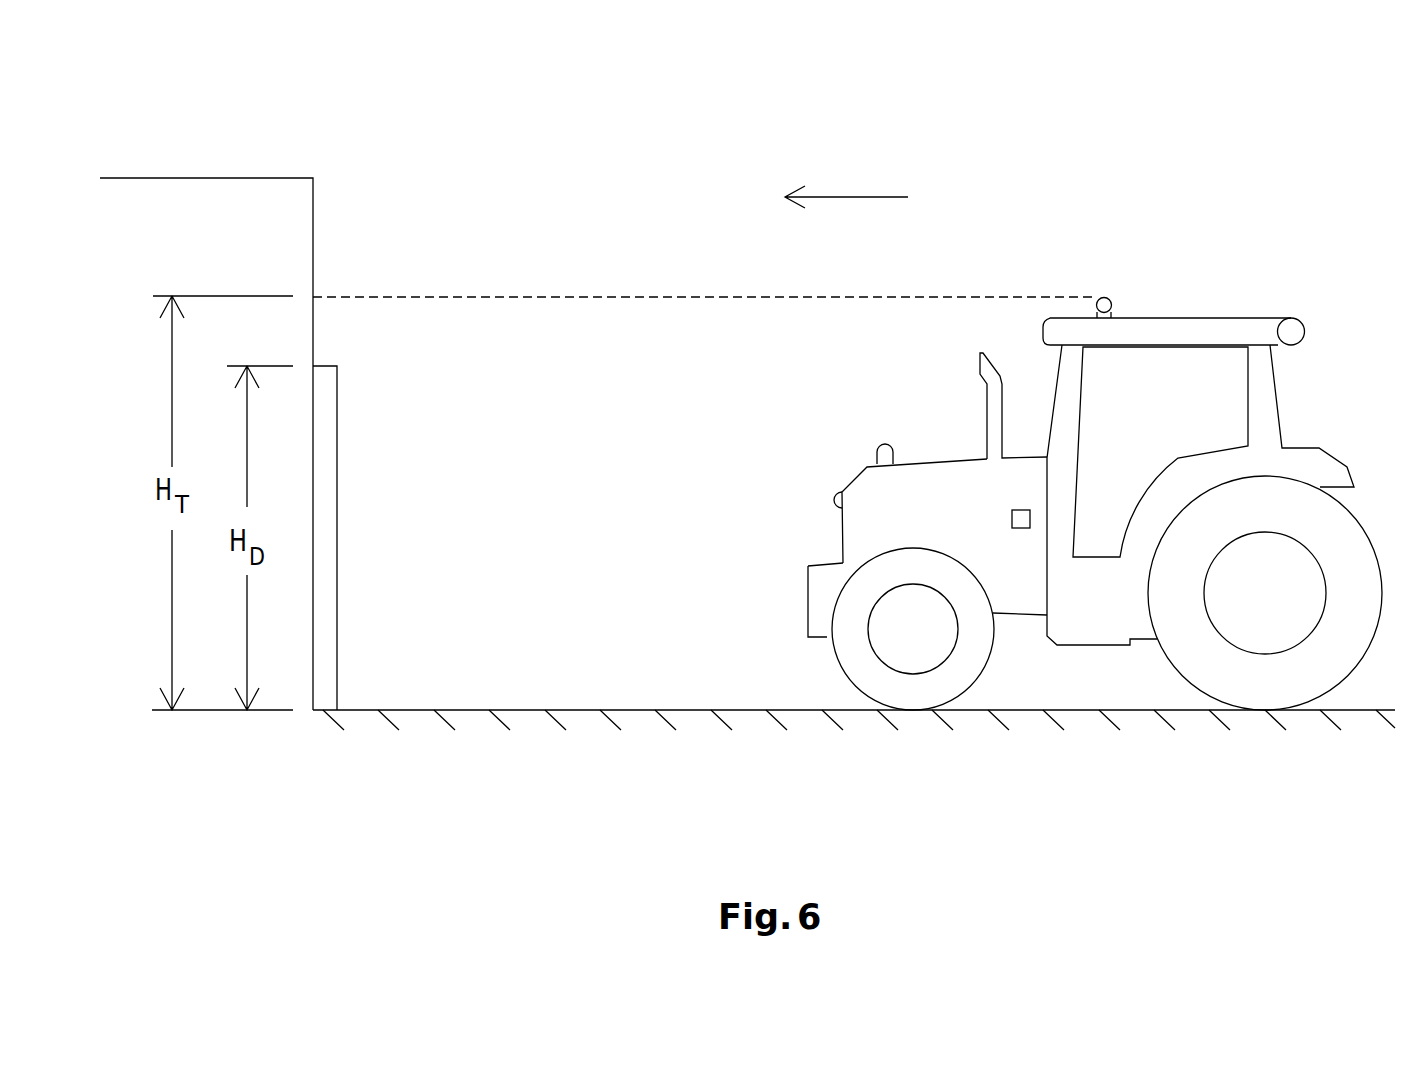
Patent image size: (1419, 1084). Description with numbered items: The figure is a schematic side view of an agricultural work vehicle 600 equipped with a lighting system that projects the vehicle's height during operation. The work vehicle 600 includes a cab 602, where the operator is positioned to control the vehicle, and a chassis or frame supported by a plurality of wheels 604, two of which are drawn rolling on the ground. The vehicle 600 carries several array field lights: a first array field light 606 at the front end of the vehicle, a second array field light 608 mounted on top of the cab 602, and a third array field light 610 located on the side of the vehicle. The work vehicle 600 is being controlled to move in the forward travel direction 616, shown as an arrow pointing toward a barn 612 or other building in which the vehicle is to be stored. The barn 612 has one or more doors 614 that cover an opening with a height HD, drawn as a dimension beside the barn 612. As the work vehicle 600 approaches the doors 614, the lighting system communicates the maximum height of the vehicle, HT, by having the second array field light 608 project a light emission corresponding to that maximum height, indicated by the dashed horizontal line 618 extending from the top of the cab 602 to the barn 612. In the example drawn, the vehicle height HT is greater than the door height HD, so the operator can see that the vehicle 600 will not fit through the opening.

The work vehicle 600 is at (1036, 468).
The cab 602 is at (1218, 413).
The wheels 604 is at (917, 690).
The first array field light 606 is at (826, 500).
The second array field light 608 is at (1108, 297).
The third array field light 610 is at (1011, 517).
The barn 612 is at (207, 178).
The doors 614 is at (337, 538).
The forward travel direction 616 is at (848, 197).
The vehicle height reference line 618 is at (552, 296).